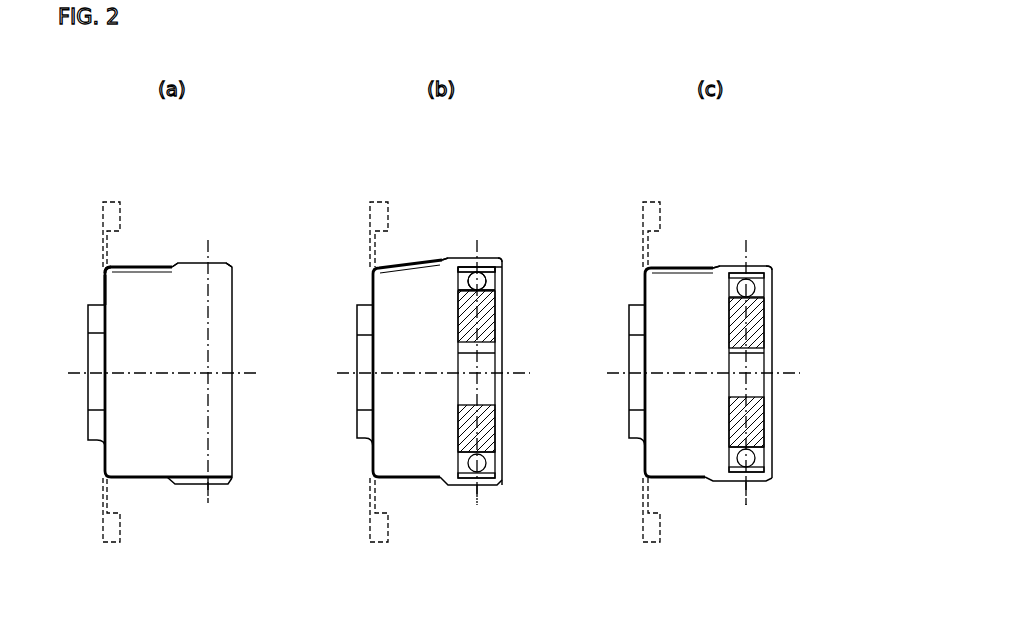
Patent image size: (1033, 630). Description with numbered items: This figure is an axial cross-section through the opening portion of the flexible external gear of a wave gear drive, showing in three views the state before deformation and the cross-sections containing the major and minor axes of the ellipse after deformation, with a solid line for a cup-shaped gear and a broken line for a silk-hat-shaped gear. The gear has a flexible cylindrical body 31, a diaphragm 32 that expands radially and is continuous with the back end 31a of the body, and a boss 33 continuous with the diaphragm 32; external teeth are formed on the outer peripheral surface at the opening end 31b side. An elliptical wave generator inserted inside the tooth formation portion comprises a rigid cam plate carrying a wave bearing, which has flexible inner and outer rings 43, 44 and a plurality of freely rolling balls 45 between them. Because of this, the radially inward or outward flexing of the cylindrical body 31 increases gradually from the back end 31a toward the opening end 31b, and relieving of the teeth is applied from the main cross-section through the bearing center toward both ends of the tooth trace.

The flexible cylindrical body 31 is at (151, 272).
The back end 31a is at (105, 266).
The opening end 31b is at (232, 267).
The diaphragm 32 is at (103, 286).
The boss 33 is at (95, 324).
The flexible inner ring 43 is at (500, 268).
The flexible outer ring 44 is at (495, 289).
The balls 45 is at (486, 280).